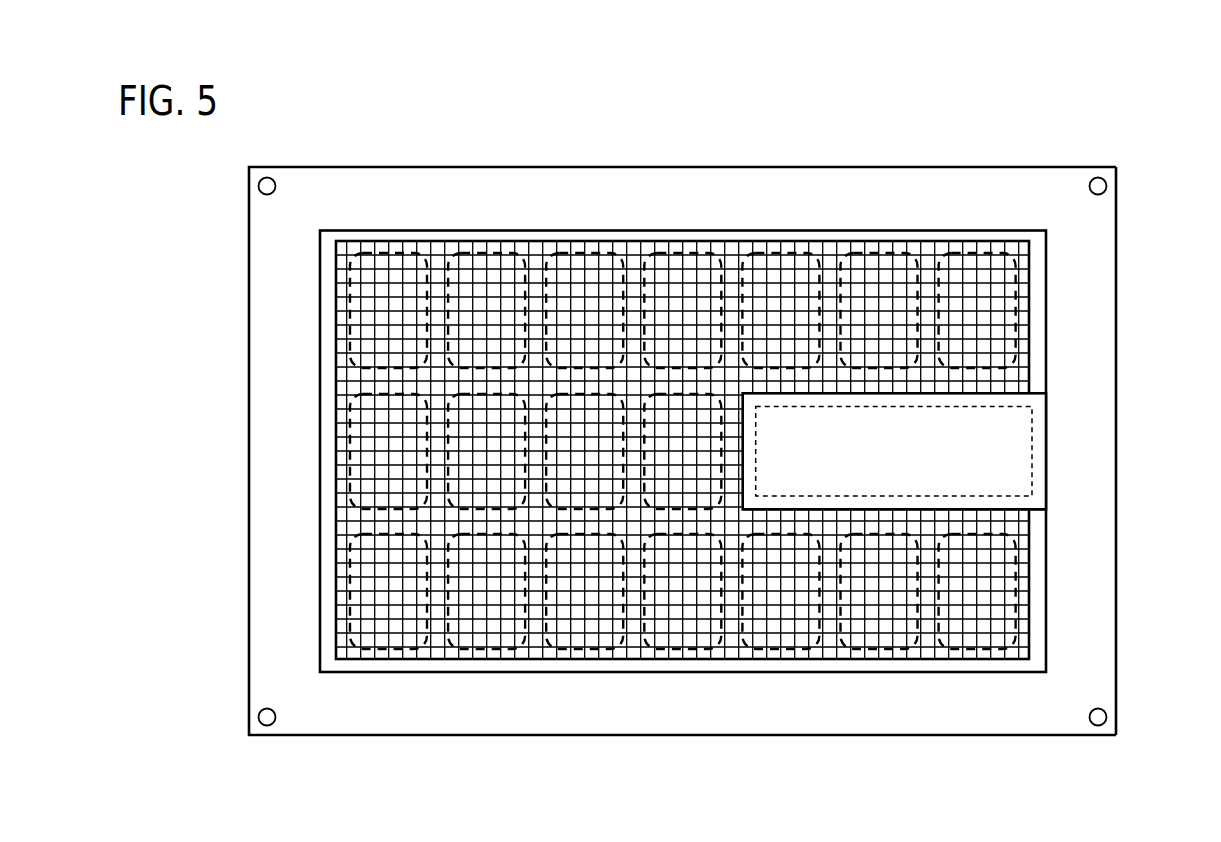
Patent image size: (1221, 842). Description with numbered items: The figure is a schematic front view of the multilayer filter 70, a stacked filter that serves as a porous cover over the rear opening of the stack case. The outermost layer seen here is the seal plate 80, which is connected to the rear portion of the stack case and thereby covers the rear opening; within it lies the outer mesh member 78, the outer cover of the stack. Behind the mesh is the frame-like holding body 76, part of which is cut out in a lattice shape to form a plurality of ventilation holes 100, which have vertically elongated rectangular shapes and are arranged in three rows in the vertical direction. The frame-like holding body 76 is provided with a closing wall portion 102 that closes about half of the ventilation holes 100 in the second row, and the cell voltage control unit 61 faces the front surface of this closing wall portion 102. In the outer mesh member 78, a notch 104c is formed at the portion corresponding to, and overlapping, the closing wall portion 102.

The multilayer filter 70 is at (1040, 150).
The outer mesh member 78 is at (732, 262).
The ventilation holes 100 is at (985, 280).
The closing wall portion 102 is at (1022, 418).
The frame-like holding body 76 is at (980, 450).
The cell voltage control unit 61 is at (1034, 455).
The notch 104c is at (944, 507).
The seal plate 80 is at (1090, 560).